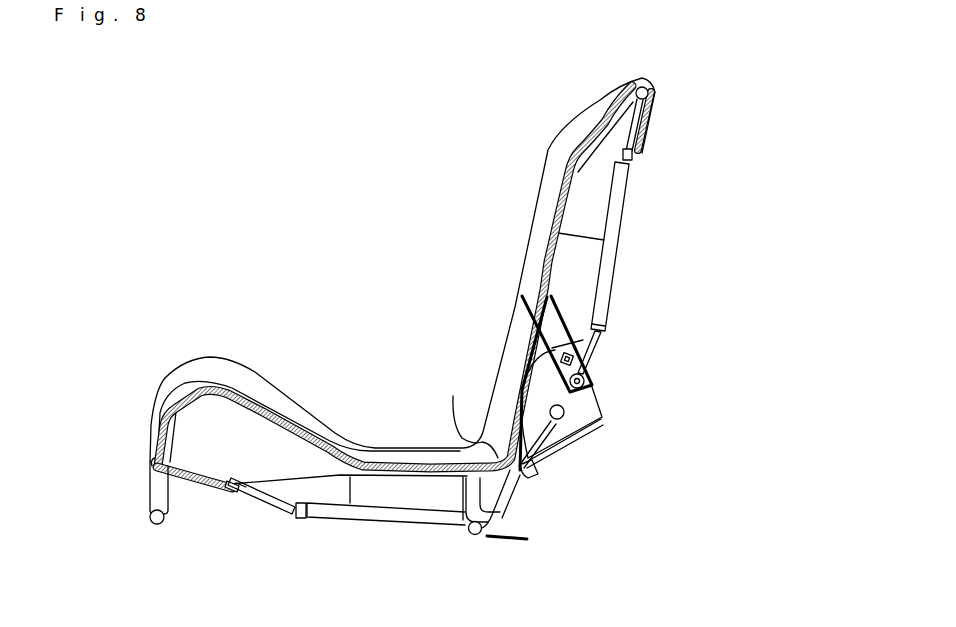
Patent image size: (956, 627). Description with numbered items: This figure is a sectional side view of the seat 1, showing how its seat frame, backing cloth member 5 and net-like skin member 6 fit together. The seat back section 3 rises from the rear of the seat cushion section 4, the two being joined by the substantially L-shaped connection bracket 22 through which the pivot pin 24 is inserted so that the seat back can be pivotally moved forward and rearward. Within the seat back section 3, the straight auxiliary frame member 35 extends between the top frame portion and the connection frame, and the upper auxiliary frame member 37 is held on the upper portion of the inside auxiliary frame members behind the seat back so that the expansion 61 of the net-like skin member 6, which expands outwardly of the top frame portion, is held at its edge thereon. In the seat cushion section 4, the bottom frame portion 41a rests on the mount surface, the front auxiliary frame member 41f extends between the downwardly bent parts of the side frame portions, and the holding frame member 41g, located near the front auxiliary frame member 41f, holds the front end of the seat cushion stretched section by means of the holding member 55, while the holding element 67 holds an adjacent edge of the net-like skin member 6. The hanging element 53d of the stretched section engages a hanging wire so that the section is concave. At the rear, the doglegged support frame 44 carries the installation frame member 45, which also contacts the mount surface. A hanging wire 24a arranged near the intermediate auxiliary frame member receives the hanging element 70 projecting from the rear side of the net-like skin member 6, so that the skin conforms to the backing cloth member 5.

The seat 1 is at (492, 226).
The seat back section 3 is at (650, 93).
The seat cushion section 4 is at (147, 492).
The backing cloth member 5 is at (338, 480).
The net-like skin member 6 is at (562, 176).
The connection bracket 22 is at (595, 407).
The pivot pin 24 is at (530, 473).
The hanging wire 24a is at (532, 452).
The auxiliary frame member 35 is at (590, 348).
The upper auxiliary frame member 37 is at (636, 147).
The bottom frame portion 41a is at (152, 522).
The front auxiliary frame member 41f is at (148, 462).
The holding frame member 41g is at (232, 482).
The support frame 44 is at (488, 497).
The installation frame member 45 is at (475, 536).
The hanging element 53d is at (394, 488).
The holding member 55 is at (247, 497).
The expansion 61 is at (650, 127).
The holding element 67 is at (228, 495).
The hanging element 70 is at (504, 421).